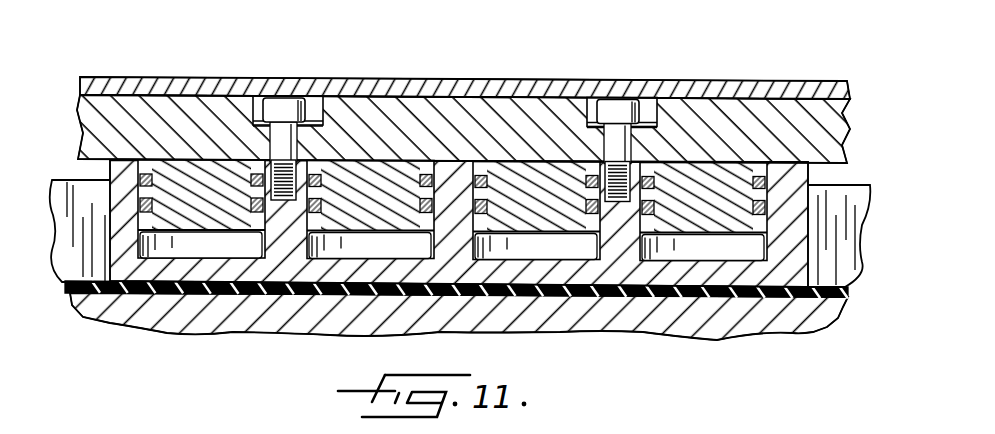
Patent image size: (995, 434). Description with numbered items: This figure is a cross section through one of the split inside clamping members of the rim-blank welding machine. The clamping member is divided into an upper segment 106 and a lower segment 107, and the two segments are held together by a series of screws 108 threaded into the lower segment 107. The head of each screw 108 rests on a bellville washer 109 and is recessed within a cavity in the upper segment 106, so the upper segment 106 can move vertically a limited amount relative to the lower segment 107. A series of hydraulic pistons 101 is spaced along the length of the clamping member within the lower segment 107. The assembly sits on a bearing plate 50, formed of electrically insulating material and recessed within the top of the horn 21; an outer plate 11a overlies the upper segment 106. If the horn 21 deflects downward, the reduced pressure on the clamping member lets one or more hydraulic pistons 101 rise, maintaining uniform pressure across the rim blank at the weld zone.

The cover plate 11a is at (153, 80).
The upper segment 106 is at (414, 104).
The lower segment 107 is at (110, 172).
The screw 108 is at (279, 106).
The bellville washer 109 is at (322, 118).
The hydraulic piston 101 is at (216, 203).
The horn 21 is at (167, 323).
The bearing plate 50 is at (583, 297).